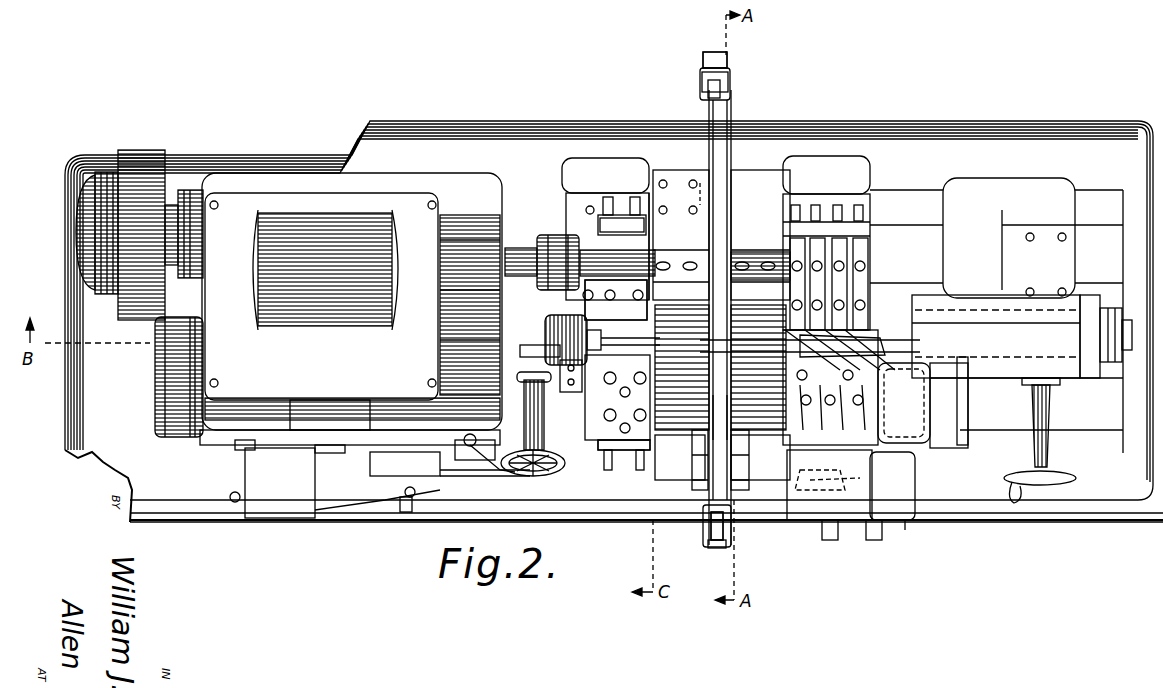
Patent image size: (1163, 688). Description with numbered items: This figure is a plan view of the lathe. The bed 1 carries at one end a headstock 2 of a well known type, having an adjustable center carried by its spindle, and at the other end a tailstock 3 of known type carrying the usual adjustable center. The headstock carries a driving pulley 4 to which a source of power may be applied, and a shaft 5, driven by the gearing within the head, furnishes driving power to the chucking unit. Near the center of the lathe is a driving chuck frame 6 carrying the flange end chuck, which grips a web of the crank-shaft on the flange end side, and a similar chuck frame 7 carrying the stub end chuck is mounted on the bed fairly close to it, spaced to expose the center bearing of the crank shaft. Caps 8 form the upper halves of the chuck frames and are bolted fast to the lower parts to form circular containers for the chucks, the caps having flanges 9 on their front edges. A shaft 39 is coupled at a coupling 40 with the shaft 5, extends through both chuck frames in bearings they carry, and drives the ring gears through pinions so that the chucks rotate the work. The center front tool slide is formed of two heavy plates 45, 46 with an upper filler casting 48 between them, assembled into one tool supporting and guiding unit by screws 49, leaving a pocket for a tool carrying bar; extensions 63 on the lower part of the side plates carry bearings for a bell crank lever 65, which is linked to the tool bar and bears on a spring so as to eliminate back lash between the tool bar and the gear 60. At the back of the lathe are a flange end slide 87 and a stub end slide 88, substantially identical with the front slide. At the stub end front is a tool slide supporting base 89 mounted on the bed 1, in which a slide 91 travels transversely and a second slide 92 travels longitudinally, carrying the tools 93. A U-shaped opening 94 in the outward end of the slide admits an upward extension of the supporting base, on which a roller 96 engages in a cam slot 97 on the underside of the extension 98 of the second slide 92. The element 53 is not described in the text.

The bed 1 is at (1106, 445).
The headstock 2 is at (415, 212).
The tailstock 3 is at (1103, 340).
The driving pulley 4 is at (146, 180).
The shaft 5 is at (521, 258).
The driving chuck frame 6 is at (660, 290).
The chuck frame 7 is at (778, 312).
The caps 8 is at (752, 306).
The flanges 9 is at (700, 480).
The shaft 39 is at (621, 258).
The coupling 40 is at (566, 270).
The heavy plate 45 is at (707, 520).
The heavy plate 46 is at (733, 512).
The upper filler casting 48 is at (720, 132).
The screws 49 is at (724, 419).
The spindle 53 is at (726, 372).
The gear 60 is at (650, 176).
The extensions 63 is at (730, 80).
The bell crank lever 65 is at (718, 50).
The flange end rear slide 87 is at (606, 314).
The stub end rear slide 88 is at (826, 243).
The tool slide supporting base 89 is at (912, 483).
The slide 91 is at (905, 530).
The second slide 92 is at (940, 405).
The tools 93 is at (860, 410).
The U-shaped opening 94 is at (874, 540).
The roller 96 is at (892, 486).
The cam slot 97 is at (829, 485).
The extension 98 is at (830, 540).